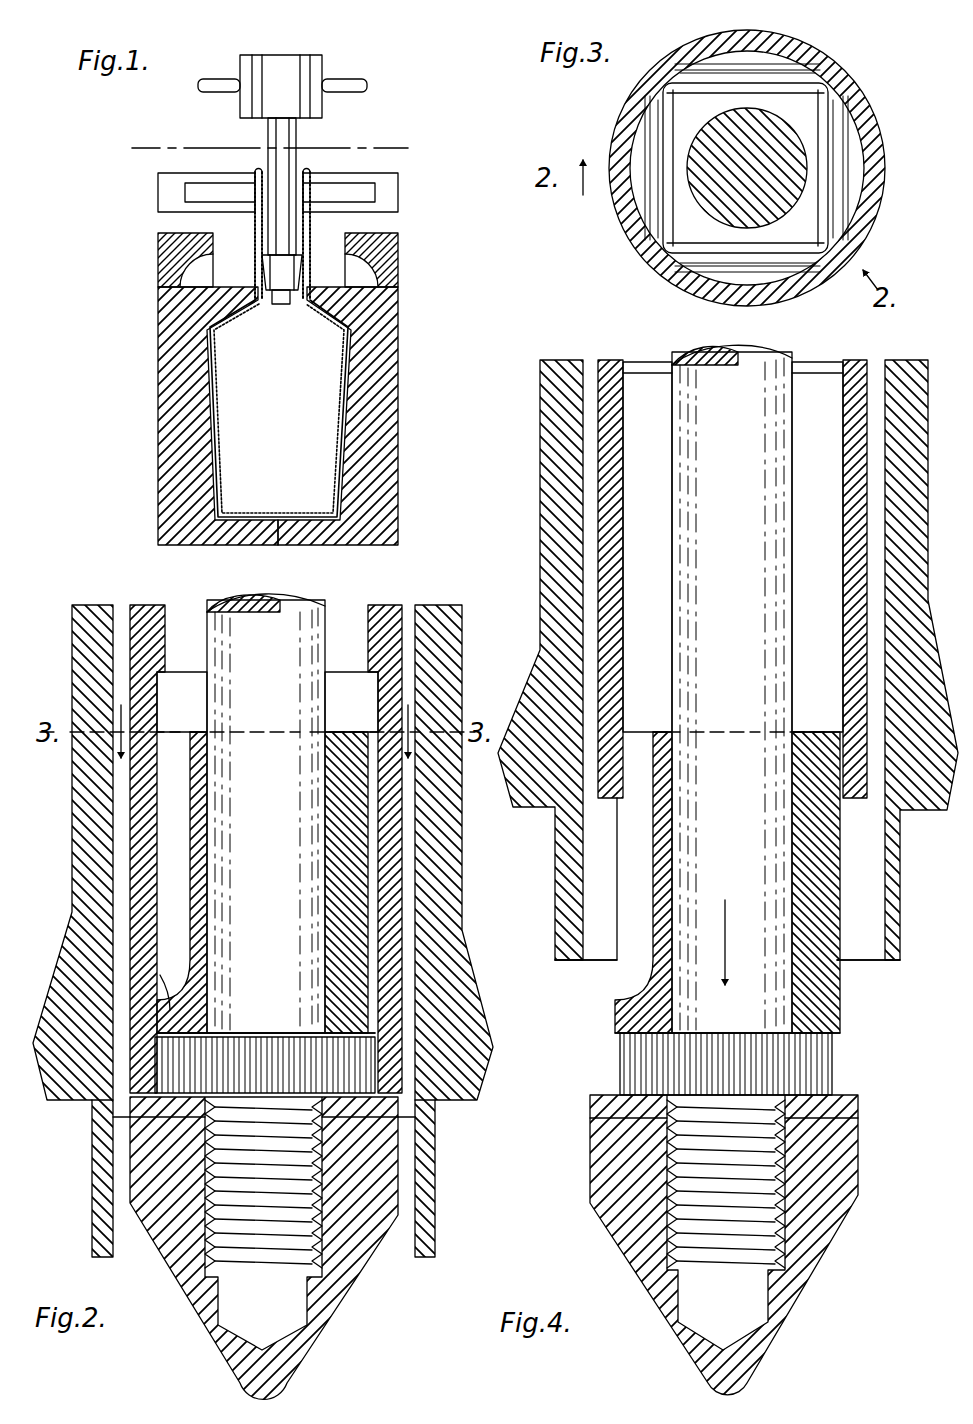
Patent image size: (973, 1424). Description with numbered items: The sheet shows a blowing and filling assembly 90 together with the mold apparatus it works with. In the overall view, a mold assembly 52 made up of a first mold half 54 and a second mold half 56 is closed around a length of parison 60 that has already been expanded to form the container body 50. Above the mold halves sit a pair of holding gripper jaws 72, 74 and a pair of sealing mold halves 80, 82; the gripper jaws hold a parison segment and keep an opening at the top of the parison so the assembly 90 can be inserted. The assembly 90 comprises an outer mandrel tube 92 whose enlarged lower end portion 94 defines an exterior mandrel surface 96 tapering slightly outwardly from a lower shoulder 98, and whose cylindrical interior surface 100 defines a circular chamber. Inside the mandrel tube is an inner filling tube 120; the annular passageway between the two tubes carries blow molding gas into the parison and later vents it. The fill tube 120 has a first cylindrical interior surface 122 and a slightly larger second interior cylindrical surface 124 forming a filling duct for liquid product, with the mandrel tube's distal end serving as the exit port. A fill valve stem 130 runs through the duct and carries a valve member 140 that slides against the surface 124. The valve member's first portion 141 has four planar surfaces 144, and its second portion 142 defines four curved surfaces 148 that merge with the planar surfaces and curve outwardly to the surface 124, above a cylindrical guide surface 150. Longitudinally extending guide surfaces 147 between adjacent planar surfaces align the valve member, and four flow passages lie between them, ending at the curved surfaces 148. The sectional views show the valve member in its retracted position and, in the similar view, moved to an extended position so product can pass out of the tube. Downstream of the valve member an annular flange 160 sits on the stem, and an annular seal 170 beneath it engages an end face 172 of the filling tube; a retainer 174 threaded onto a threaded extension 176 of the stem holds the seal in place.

In FIG. 1, the container body 50 is at (336, 420).
In FIG. 1, the mold assembly 52 is at (282, 415).
In FIG. 1, the first mold half 54 is at (160, 400).
In FIG. 1, the second mold half 56 is at (378, 388).
In FIG. 1, the length of parison 60 is at (312, 224).
In FIG. 1, the holding gripper jaw 72 is at (398, 190).
In FIG. 1, the holding gripper jaw 74 is at (160, 192).
In FIG. 1, the sealing mold half 80 is at (160, 262).
In FIG. 1, the sealing mold half 82 is at (396, 266).
In FIG. 1, the blowing and filling assembly 90 is at (333, 68).
In FIG. 2, the blowing and filling assembly 90 is at (385, 592).
In FIG. 1, the outer mandrel tube 92 is at (290, 128).
In FIG. 2, the outer mandrel tube 92 is at (458, 624).
In FIG. 4, the outer mandrel tube 92 is at (537, 385).
In FIG. 1, the enlarged lower end portion 94 is at (272, 272).
In FIG. 2, the enlarged lower end portion 94 is at (462, 990).
In FIG. 1, the exterior mandrel surface 96 is at (286, 304).
In FIG. 2, the exterior mandrel surface 96 is at (478, 1060).
In FIG. 4, the exterior mandrel surface 96 is at (920, 850).
In FIG. 2, the lower shoulder 98 is at (465, 1100).
In FIG. 4, the lower shoulder 98 is at (935, 855).
In FIG. 2, the cylindrical interior surface 100 is at (418, 842).
In FIG. 4, the cylindrical interior surface 100 is at (582, 462).
In FIG. 3, the inner filling tube 120 is at (813, 42).
In FIG. 2, the inner filling tube 120 is at (122, 626).
In FIG. 4, the inner filling tube 120 is at (598, 362).
In FIG. 2, the first cylindrical interior surface 122 is at (372, 620).
In FIG. 4, the first cylindrical interior surface 122 is at (835, 368).
In FIG. 3, the second interior cylindrical surface 124 is at (652, 205).
In FIG. 2, the second interior cylindrical surface 124 is at (376, 688).
In FIG. 4, the second interior cylindrical surface 124 is at (830, 645).
In FIG. 2, the fill valve stem 130 is at (248, 595).
In FIG. 4, the fill valve stem 130 is at (698, 348).
In FIG. 3, the valve member 140 is at (836, 197).
In FIG. 2, the valve member 140 is at (320, 1005).
In FIG. 4, the valve member 140 is at (845, 1020).
In FIG. 2, the first portion 141 is at (157, 830).
In FIG. 2, the second portion 142 is at (160, 960).
In FIG. 3, the planar surface 144 is at (748, 82).
In FIG. 2, the planar surface 144 is at (325, 824).
In FIG. 4, the planar surface 144 is at (650, 852).
In FIG. 3, the longitudinally extending guide surface 147 is at (660, 95).
In FIG. 4, the longitudinally extending guide surface 147 is at (840, 872).
In FIG. 3, the curved surface 148 is at (742, 60).
In FIG. 2, the curved surface 148 is at (325, 918).
In FIG. 4, the curved surface 148 is at (630, 965).
In FIG. 2, the cylindrical guide surface 150 is at (157, 1045).
In FIG. 4, the cylindrical guide surface 150 is at (618, 1018).
In FIG. 2, the annular flange 160 is at (155, 1068).
In FIG. 4, the annular flange 160 is at (655, 1058).
In FIG. 2, the annular seal 170 is at (315, 1248).
In FIG. 4, the annular seal 170 is at (759, 1226).
In FIG. 2, the end face 172 is at (110, 1123).
In FIG. 4, the end face 172 is at (560, 970).
In FIG. 2, the retainer 174 is at (340, 1280).
In FIG. 4, the retainer 174 is at (840, 1155).
In FIG. 2, the threaded extension 176 is at (268, 1240).
In FIG. 4, the threaded extension 176 is at (726, 1184).